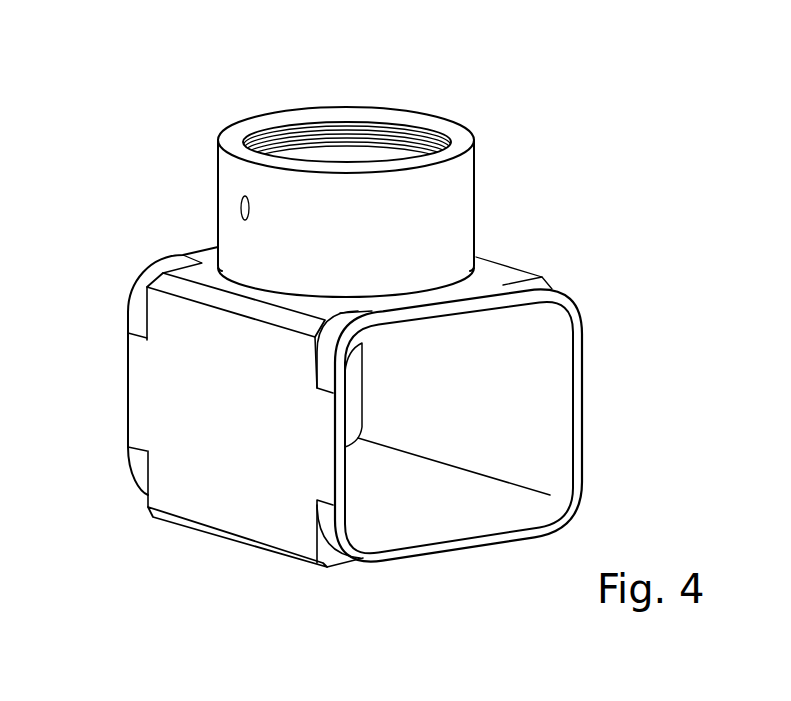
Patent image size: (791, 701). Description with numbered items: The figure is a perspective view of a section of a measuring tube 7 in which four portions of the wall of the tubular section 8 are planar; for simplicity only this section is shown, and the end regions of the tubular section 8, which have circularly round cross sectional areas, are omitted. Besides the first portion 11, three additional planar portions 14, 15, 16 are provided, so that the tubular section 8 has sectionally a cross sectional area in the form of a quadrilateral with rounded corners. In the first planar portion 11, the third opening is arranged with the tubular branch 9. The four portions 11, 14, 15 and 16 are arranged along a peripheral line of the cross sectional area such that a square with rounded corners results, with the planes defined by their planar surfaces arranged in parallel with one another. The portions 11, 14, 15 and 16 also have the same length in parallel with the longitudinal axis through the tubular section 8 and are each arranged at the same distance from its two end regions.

The measuring tube 7 is at (141, 113).
The tubular section 8 is at (227, 572).
The tubular branch 9 is at (205, 215).
The first portion 11 is at (501, 275).
The planar portion 14 is at (163, 395).
The planar portion 15 is at (385, 582).
The planar portion 16 is at (550, 393).